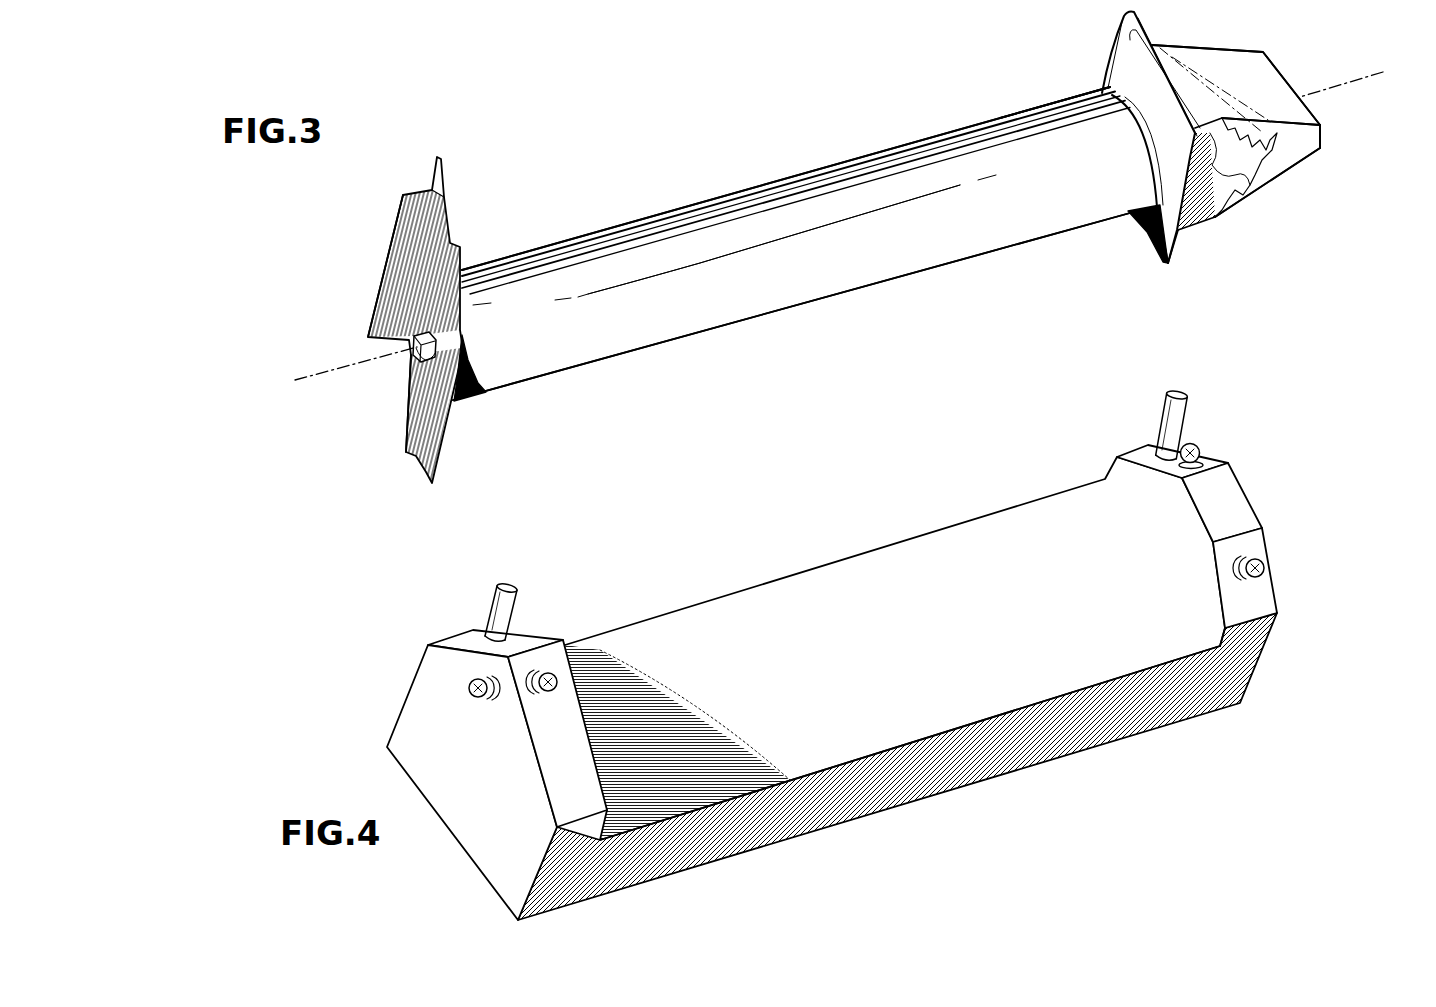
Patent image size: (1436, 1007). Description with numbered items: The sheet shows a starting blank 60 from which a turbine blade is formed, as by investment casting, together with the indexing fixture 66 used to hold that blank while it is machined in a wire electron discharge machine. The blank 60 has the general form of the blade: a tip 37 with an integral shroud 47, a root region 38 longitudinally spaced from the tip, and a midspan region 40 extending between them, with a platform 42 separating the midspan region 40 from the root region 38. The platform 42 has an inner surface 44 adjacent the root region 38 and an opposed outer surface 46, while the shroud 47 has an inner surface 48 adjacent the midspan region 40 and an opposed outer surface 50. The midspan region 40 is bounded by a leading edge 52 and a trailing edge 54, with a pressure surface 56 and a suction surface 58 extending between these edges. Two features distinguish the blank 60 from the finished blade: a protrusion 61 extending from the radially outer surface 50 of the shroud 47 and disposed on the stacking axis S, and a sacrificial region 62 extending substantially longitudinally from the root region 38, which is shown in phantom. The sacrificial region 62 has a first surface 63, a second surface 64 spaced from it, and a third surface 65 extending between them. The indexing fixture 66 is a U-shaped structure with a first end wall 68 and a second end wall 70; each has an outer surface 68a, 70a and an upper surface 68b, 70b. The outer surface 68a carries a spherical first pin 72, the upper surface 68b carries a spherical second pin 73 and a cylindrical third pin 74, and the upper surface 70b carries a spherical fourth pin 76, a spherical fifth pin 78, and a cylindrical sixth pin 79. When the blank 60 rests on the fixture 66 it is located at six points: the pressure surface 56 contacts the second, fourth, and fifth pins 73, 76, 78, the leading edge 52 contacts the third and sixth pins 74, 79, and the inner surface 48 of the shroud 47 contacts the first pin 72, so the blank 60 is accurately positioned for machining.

In FIG. 3, the tip 37 is at (477, 373).
In FIG. 3, the root region 38 is at (1237, 163).
In FIG. 3, the midspan region 40 is at (848, 263).
In FIG. 3, the platform 42 is at (1175, 253).
In FIG. 3, the inner surface 44 is at (1178, 237).
In FIG. 3, the outer surface 46 is at (1157, 230).
In FIG. 3, the shroud 47 is at (427, 470).
In FIG. 3, the inner surface 48 is at (450, 202).
In FIG. 3, the outer surface 50 is at (420, 283).
In FIG. 3, the leading edge 52 is at (763, 188).
In FIG. 3, the trailing edge 54 is at (907, 272).
In FIG. 3, the pressure surface 56 is at (1083, 108).
In FIG. 3, the suction surface 58 is at (998, 225).
In FIG. 3, the starting blank 60 is at (353, 240).
In FIG. 3, the protrusion 61 is at (417, 350).
In FIG. 3, the sacrificial region 62 is at (1298, 172).
In FIG. 3, the first surface 63 is at (1267, 78).
In FIG. 3, the second surface 64 is at (1317, 155).
In FIG. 3, the third surface 65 is at (1320, 133).
In FIG. 3, the stacking axis S is at (834, 229).
In FIG. 4, the indexing fixture 66 is at (977, 818).
In FIG. 4, the first end wall 68 is at (552, 640).
In FIG. 4, the outer surface 68a is at (437, 670).
In FIG. 4, the upper surface 68b is at (553, 752).
In FIG. 4, the second end wall 70 is at (1125, 478).
In FIG. 4, the outer surface 70a is at (1268, 545).
In FIG. 4, the upper surface 70b is at (1235, 502).
In FIG. 4, the first pin 72 is at (467, 688).
In FIG. 4, the second pin 73 is at (553, 680).
In FIG. 4, the third pin 74 is at (512, 590).
In FIG. 4, the fourth pin 76 is at (1265, 567).
In FIG. 4, the fifth pin 78 is at (1195, 443).
In FIG. 4, the sixth pin 79 is at (1180, 397).